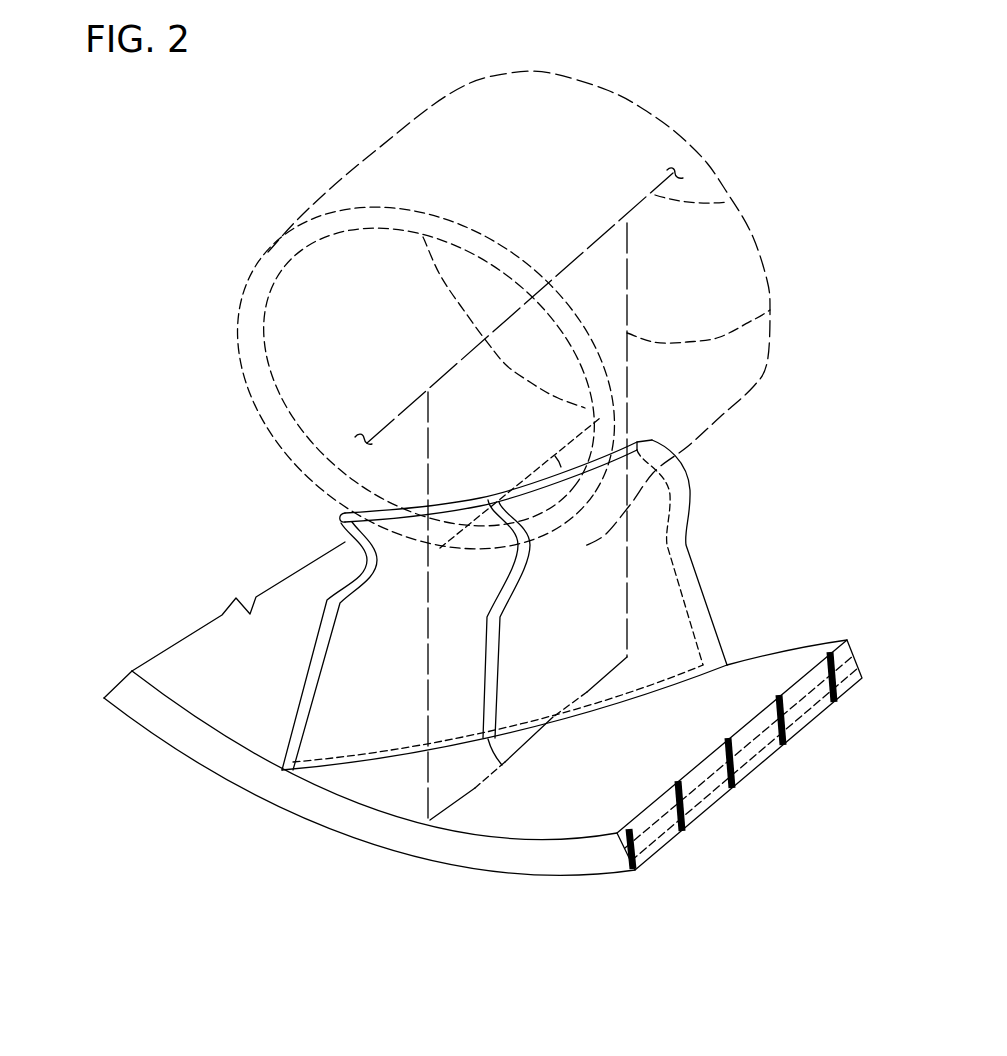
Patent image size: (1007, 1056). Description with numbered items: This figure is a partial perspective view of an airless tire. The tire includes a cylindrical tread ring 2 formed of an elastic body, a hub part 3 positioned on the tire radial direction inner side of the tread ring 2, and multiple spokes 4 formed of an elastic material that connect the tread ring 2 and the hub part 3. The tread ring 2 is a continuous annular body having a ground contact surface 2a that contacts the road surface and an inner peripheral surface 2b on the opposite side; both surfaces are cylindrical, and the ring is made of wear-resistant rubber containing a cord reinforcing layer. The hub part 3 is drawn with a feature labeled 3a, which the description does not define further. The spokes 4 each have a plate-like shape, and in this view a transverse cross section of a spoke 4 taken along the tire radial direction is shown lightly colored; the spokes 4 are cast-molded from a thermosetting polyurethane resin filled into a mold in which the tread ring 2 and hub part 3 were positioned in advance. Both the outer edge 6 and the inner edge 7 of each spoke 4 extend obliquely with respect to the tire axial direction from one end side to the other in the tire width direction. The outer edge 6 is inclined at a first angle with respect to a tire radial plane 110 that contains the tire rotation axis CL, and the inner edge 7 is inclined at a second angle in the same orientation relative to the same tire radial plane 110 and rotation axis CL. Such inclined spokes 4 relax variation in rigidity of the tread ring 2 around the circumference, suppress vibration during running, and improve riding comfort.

The tread ring 2 is at (177, 740).
The ground contact surface 2a is at (123, 717).
The inner peripheral surface 2b is at (218, 673).
The hub part 3 is at (627, 117).
The hose end opening 3a is at (457, 160).
The spoke 4 is at (653, 590).
The outer edge 6 is at (400, 762).
The inner edge 7 is at (400, 512).
The tire radial plane 110 is at (770, 312).
The tire rotation axis CL is at (727, 202).